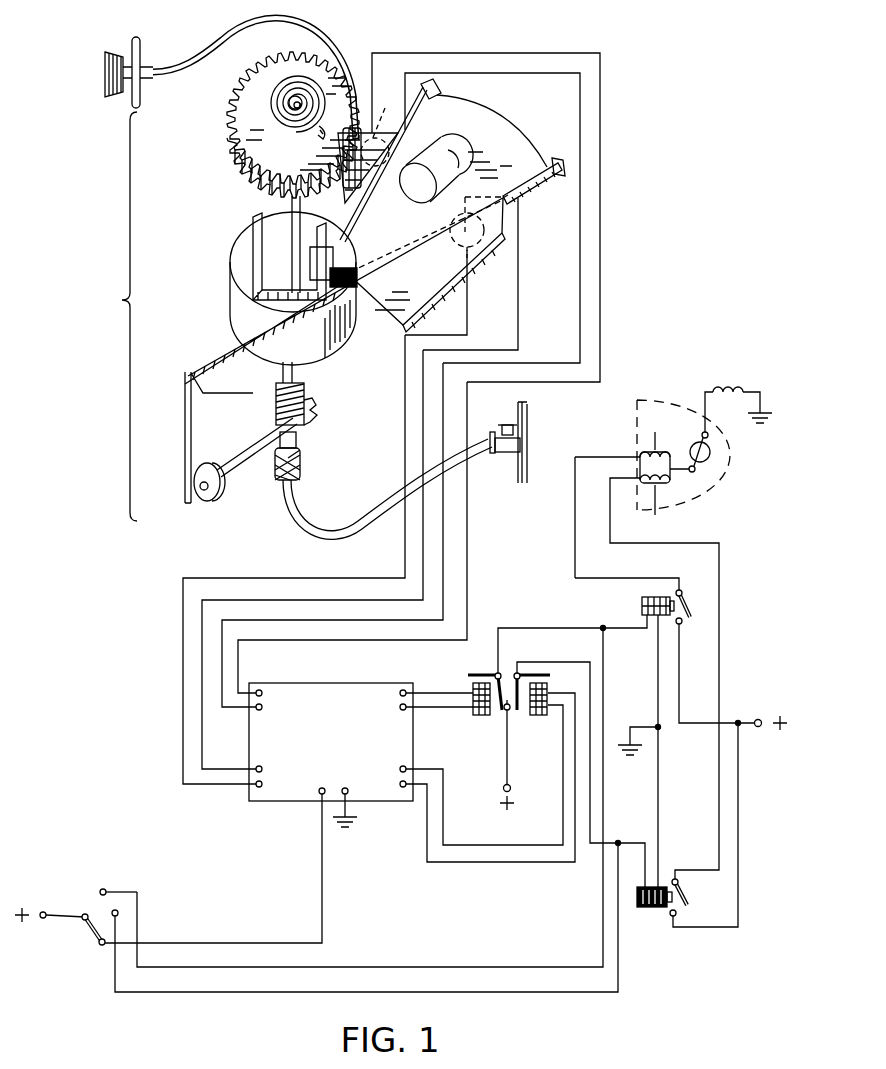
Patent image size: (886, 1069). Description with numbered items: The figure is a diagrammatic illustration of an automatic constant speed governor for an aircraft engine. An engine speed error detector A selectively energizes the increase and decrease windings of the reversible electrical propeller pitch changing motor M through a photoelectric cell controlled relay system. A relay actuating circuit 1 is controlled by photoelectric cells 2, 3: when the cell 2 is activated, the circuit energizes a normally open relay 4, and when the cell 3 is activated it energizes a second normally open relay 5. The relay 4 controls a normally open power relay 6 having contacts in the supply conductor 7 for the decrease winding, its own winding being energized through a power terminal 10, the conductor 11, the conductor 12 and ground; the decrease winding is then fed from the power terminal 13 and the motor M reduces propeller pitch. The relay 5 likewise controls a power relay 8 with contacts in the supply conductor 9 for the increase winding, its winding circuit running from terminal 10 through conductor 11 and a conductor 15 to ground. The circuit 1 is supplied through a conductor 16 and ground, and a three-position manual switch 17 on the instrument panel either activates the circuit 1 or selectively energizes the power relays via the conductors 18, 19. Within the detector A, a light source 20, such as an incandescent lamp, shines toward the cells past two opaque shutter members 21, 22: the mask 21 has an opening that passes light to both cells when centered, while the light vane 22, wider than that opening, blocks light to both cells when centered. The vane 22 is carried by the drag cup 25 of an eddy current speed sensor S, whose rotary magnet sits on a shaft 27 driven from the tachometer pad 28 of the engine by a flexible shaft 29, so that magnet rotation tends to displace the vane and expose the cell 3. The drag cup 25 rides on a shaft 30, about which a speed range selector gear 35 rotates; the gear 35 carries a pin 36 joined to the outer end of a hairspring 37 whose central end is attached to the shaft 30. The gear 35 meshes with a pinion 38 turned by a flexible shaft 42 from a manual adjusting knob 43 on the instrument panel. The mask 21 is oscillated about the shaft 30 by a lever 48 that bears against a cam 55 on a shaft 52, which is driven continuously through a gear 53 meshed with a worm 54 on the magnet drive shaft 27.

The relay actuating circuit 1 is at (322, 693).
The photoelectric cell 2 is at (381, 113).
The photoelectric cell 3 is at (484, 232).
The normally open relay 4 is at (549, 688).
The second normally open relay 5 is at (465, 682).
The normally open power relay 6 is at (668, 915).
The supply conductor 7 is at (721, 602).
The normally open power relay 8 is at (643, 596).
The supply conductor 9 is at (573, 533).
The power terminal 10 is at (502, 789).
The conductor 11 is at (503, 758).
The conductor 12 is at (658, 820).
The power terminal 13 is at (758, 719).
The conductor 15 is at (680, 677).
The conductor 16 is at (239, 943).
The manual switch 17 is at (97, 907).
The conductor 18 is at (365, 967).
The conductor 19 is at (220, 993).
The light source 20 is at (470, 172).
The shutter member 21 is at (395, 322).
The shutter member 22 is at (534, 181).
The drag cup 25 is at (255, 262).
The shaft 27 is at (298, 440).
The tachometer pad 28 is at (512, 458).
The flexible shaft 29 is at (360, 523).
The shaft 30 is at (283, 212).
The speed range selector gear 35 is at (238, 152).
The pin 36 is at (320, 138).
The hairspring 37 is at (263, 100).
The pinion 38 is at (358, 207).
The flexible shaft 42 is at (205, 58).
The manual adjusting knob 43 is at (103, 72).
The lever 48 is at (226, 351).
The shaft 52 is at (256, 448).
The gear 53 is at (318, 410).
The worm 54 is at (275, 405).
The cam 55 is at (210, 487).
The engine speed error detector A is at (112, 316).
The eddy current speed sensor S is at (226, 305).
The reversible electrical propeller pitch changing motor M is at (704, 462).